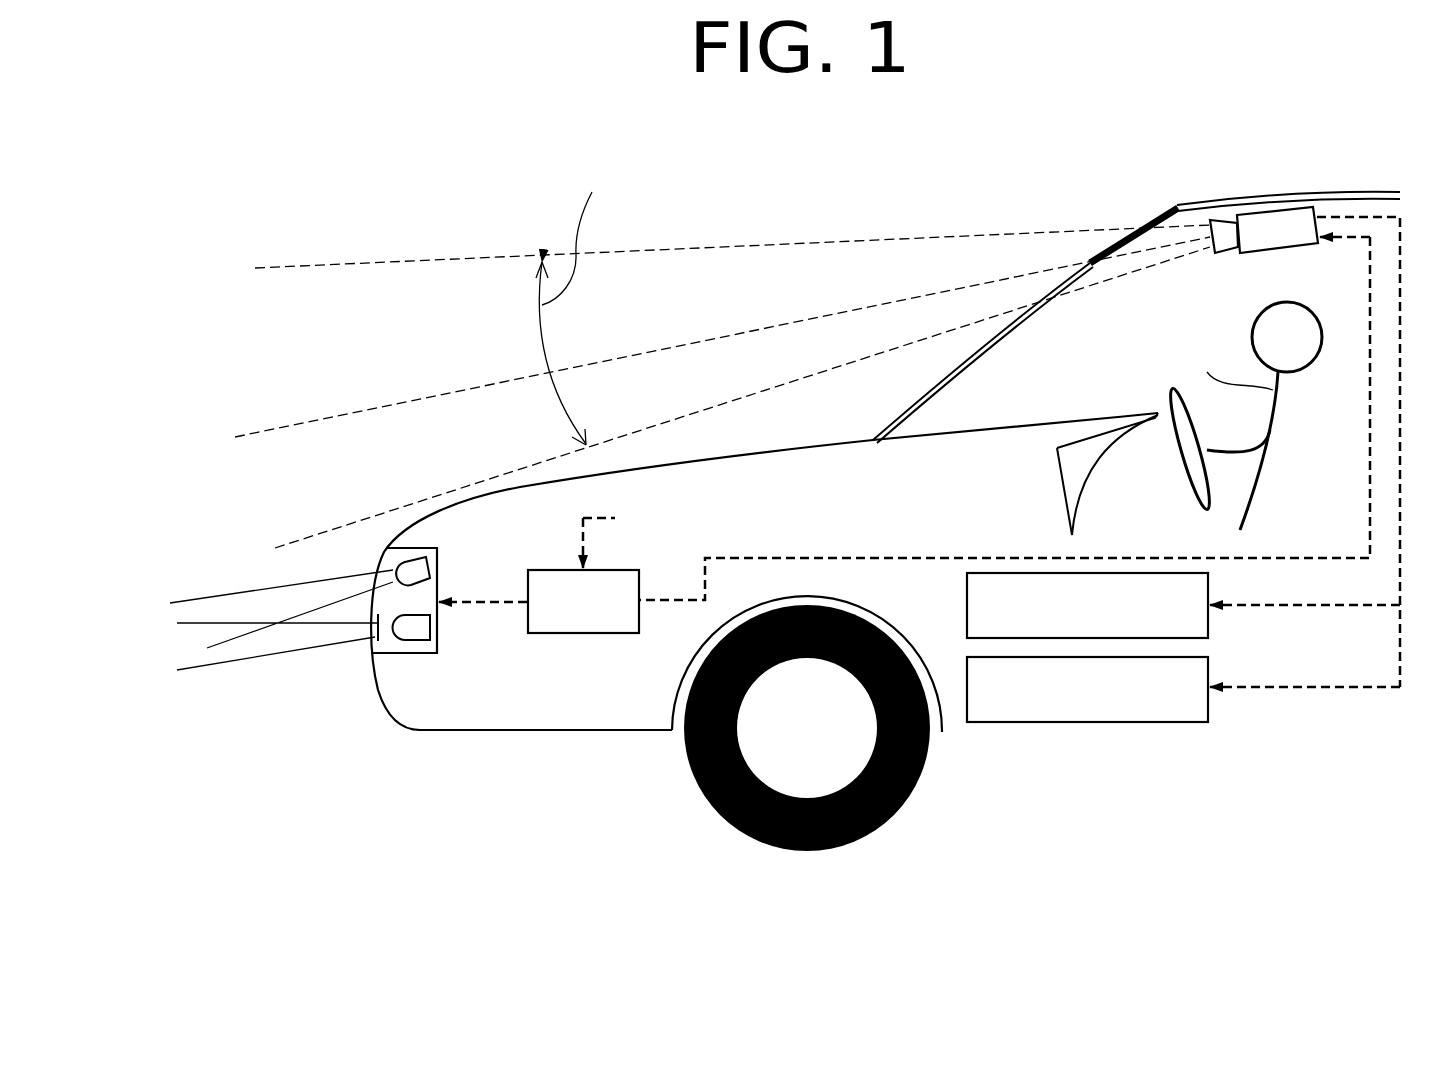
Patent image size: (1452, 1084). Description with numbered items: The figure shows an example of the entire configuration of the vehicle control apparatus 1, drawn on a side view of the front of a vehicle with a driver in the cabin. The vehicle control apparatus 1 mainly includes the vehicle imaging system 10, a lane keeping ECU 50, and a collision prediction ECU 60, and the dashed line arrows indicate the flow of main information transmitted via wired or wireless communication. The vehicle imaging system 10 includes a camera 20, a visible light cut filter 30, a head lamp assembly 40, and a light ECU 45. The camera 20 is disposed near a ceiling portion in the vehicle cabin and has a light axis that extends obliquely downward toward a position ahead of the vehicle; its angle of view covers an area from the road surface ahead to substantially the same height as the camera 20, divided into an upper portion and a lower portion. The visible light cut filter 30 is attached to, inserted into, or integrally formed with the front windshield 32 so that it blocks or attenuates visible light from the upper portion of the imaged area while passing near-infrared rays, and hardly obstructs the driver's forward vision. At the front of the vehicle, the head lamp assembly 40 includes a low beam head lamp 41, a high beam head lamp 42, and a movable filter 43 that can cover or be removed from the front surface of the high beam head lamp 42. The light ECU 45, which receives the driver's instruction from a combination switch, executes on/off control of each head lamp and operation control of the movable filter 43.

The vehicle control apparatus 1 is at (1019, 452).
The vehicle imaging system 10 is at (170, 152).
The camera 20 is at (1268, 208).
The visible light cut filter 30 is at (1132, 232).
The front windshield 32 is at (987, 348).
The head lamp assembly 40 is at (413, 548).
The low beam head lamp 41 is at (427, 570).
The high beam head lamp 42 is at (430, 628).
The movable filter 43 is at (378, 641).
The light ECU 45 is at (582, 635).
The lane keeping ECU 50 is at (1208, 627).
The collision prediction ECU 60 is at (1208, 710).